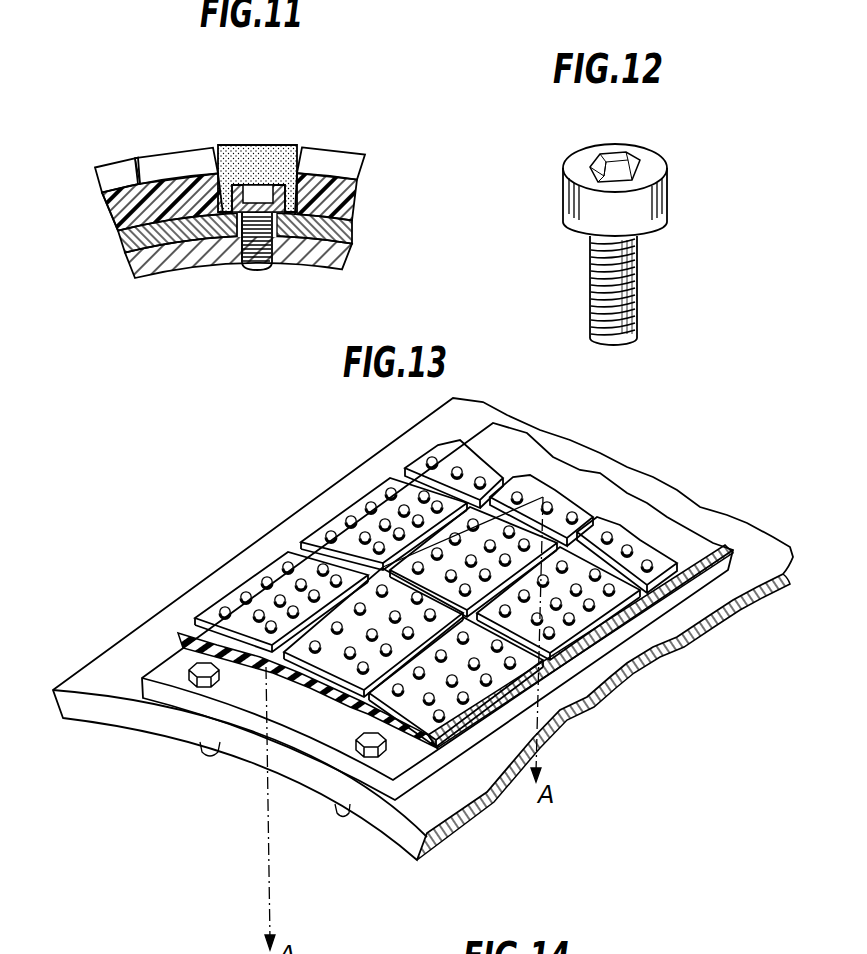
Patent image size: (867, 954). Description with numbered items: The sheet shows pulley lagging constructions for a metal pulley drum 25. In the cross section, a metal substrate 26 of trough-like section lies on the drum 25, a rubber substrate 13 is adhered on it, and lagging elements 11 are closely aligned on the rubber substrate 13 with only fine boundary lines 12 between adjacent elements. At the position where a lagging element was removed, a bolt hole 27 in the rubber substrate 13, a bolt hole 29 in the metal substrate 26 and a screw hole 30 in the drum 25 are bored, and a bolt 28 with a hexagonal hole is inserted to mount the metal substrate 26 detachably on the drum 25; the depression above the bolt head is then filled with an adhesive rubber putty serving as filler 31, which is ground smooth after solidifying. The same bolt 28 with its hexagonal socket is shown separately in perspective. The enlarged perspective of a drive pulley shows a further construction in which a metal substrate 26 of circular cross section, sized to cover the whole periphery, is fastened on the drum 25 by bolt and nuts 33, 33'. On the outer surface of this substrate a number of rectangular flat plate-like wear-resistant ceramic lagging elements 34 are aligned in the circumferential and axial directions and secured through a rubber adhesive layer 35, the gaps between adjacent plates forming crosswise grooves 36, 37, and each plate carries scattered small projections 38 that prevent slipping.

In FIG. 11, the lagging element 11 is at (110, 173).
In FIG. 11, the fine boundary lines 12 is at (132, 167).
In FIG. 11, the rubber substrate 13 is at (337, 197).
In FIG. 11, the metal pulley drum 25 is at (340, 247).
In FIG. 13, the metal pulley drum 25 is at (153, 713).
In FIG. 11, the metal substrate 26 is at (347, 230).
In FIG. 13, the metal substrate 26 is at (487, 807).
In FIG. 11, the bolt hole 27 is at (117, 217).
In FIG. 11, the bolt with a hexagonal hole 28 is at (267, 247).
In FIG. 12, the bolt with a hexagonal hole 28 is at (590, 283).
In FIG. 11, the bolt hole 29 is at (200, 257).
In FIG. 11, the screw hole 30 is at (220, 263).
In FIG. 11, the filler 31 is at (253, 160).
In FIG. 13, the bolt 33 is at (340, 819).
In FIG. 13, the nut 33' is at (349, 843).
In FIG. 13, the wear-resistant lagging element 34 is at (273, 570).
In FIG. 13, the rubber adhesive layer 35 is at (263, 670).
In FIG. 13, the groove 36 is at (297, 545).
In FIG. 13, the groove 37 is at (510, 483).
In FIG. 13, the small projection 38 is at (227, 613).